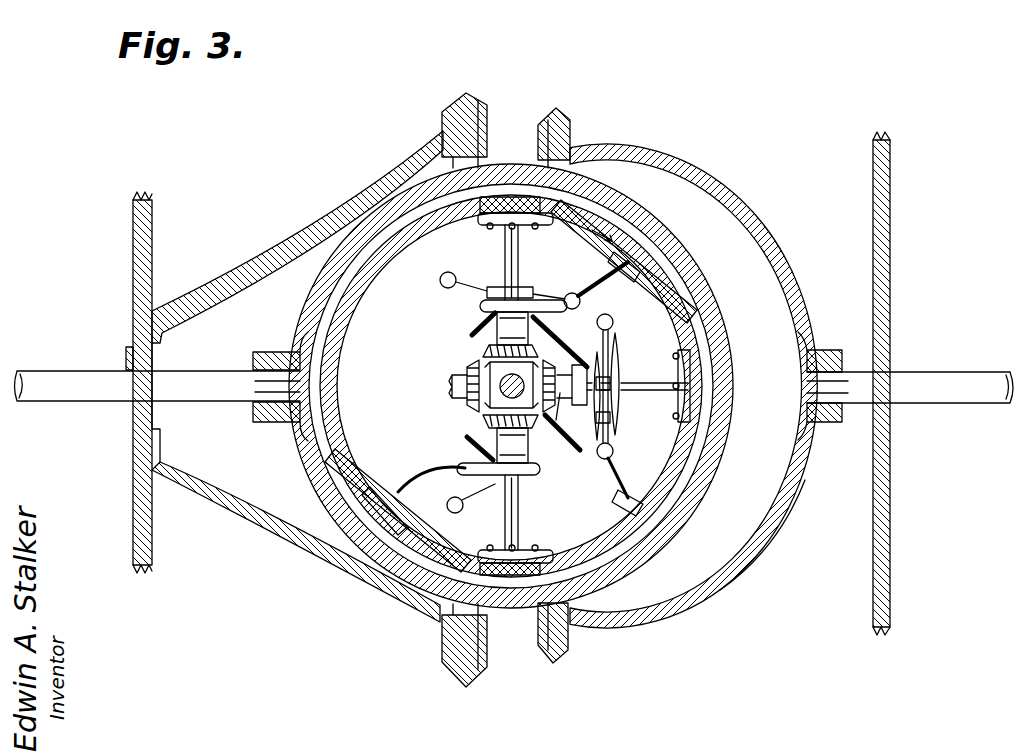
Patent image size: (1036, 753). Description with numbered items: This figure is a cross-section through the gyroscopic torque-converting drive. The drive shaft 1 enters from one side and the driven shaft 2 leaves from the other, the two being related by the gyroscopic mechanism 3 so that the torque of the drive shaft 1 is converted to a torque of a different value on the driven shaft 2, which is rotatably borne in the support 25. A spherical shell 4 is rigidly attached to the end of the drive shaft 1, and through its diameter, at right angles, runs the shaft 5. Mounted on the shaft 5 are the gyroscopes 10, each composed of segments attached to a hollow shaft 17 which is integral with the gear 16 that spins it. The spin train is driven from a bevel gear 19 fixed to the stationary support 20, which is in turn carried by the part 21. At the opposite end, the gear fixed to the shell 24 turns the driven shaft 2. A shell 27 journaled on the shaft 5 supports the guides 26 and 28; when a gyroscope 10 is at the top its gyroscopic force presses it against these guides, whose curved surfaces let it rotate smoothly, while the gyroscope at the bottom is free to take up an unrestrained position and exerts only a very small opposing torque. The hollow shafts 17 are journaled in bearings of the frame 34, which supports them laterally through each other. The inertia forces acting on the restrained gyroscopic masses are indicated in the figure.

The drive shaft 1 is at (190, 385).
The driven shaft 2 is at (960, 404).
The gyroscopic mechanism 3 is at (756, 242).
The spherical shell 4 is at (300, 452).
The shaft 5 is at (462, 386).
The gyroscope 10 is at (446, 287).
The gear 16 is at (467, 366).
The hollow shaft 17 is at (448, 272).
The bevel gear 19 is at (445, 105).
The stationary support 20 is at (287, 238).
The part 21 is at (133, 229).
The shell 24 is at (752, 560).
The support 25 is at (890, 234).
The guide 26 is at (548, 286).
The shell 27 is at (698, 345).
The guide 28 is at (490, 308).
The frame 34 is at (486, 446).